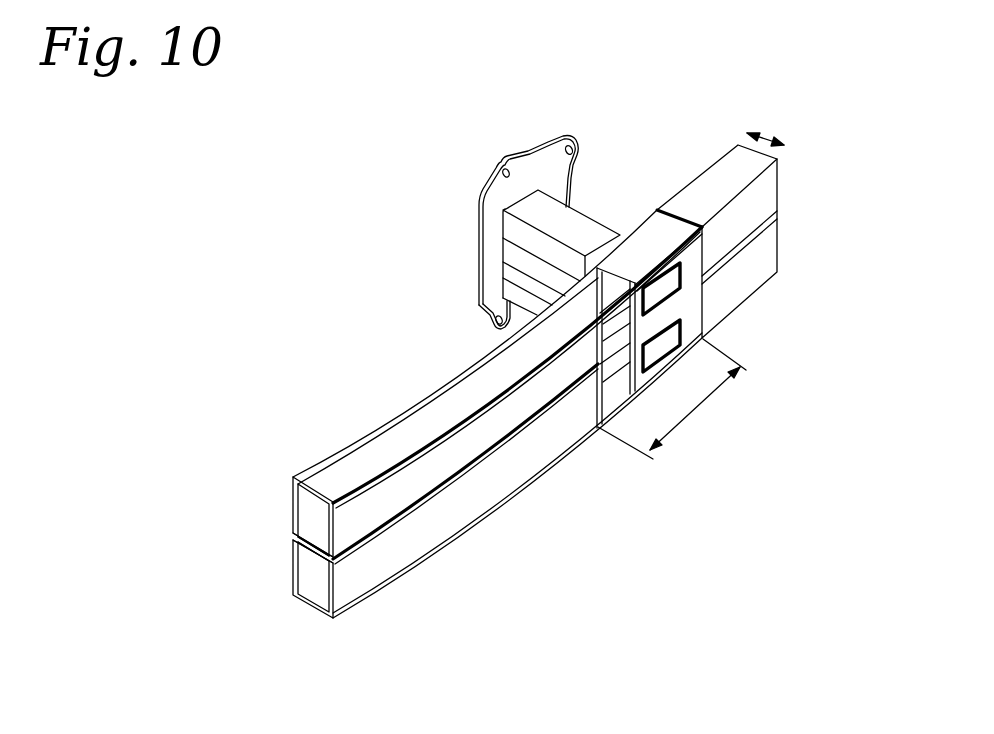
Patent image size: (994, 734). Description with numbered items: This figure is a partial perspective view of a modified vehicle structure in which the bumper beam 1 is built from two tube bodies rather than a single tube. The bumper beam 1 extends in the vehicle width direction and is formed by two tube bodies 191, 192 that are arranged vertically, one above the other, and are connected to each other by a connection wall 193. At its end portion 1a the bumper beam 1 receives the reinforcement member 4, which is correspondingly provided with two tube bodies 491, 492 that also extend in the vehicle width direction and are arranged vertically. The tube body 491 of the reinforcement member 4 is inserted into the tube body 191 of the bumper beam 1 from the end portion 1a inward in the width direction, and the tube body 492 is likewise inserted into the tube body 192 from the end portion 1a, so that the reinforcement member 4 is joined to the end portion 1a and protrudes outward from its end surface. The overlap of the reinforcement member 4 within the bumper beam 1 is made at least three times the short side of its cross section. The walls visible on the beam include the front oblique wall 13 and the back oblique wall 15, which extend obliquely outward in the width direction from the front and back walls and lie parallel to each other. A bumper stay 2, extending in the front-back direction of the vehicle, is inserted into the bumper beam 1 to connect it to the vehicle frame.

The bumper beam 1 is at (507, 441).
The end portion of the bumper beam 1a is at (752, 414).
The bumper stay 2 is at (600, 223).
The reinforcement member 4 is at (742, 208).
The front oblique wall 13 is at (523, 463).
The back oblique wall 15 is at (432, 387).
The tube body 191 is at (316, 492).
The tube body 192 is at (311, 605).
The connection wall 193 is at (314, 554).
The tube body 491 is at (735, 165).
The tube body 492 is at (742, 277).